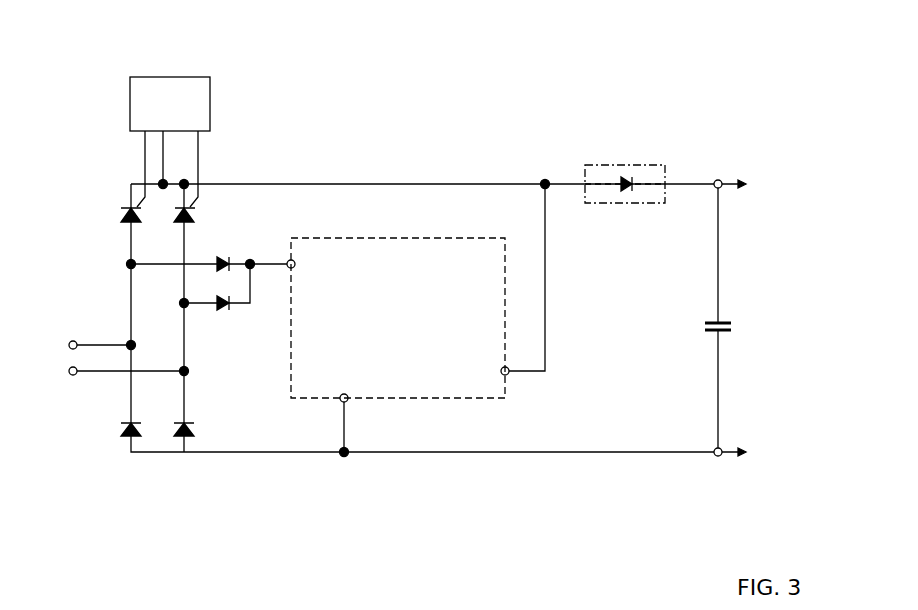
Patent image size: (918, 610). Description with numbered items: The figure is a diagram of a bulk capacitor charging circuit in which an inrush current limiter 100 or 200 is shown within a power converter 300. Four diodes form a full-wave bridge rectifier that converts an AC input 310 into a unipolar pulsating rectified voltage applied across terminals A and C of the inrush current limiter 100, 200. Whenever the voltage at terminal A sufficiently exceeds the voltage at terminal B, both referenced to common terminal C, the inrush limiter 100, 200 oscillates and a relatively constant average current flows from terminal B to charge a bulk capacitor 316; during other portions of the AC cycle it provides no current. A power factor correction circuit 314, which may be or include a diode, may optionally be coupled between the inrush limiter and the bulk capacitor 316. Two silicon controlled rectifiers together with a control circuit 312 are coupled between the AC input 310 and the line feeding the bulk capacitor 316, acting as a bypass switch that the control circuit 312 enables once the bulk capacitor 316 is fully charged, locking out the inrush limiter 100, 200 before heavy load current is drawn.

The power converter 300 is at (436, 237).
The control circuit 312 is at (170, 142).
The AC input 310 is at (102, 357).
The inrush current limiter 100 is at (398, 320).
The inrush current limiter 200 is at (398, 320).
The power factor correction circuit 314 is at (625, 166).
The bulk capacitor 316 is at (781, 318).